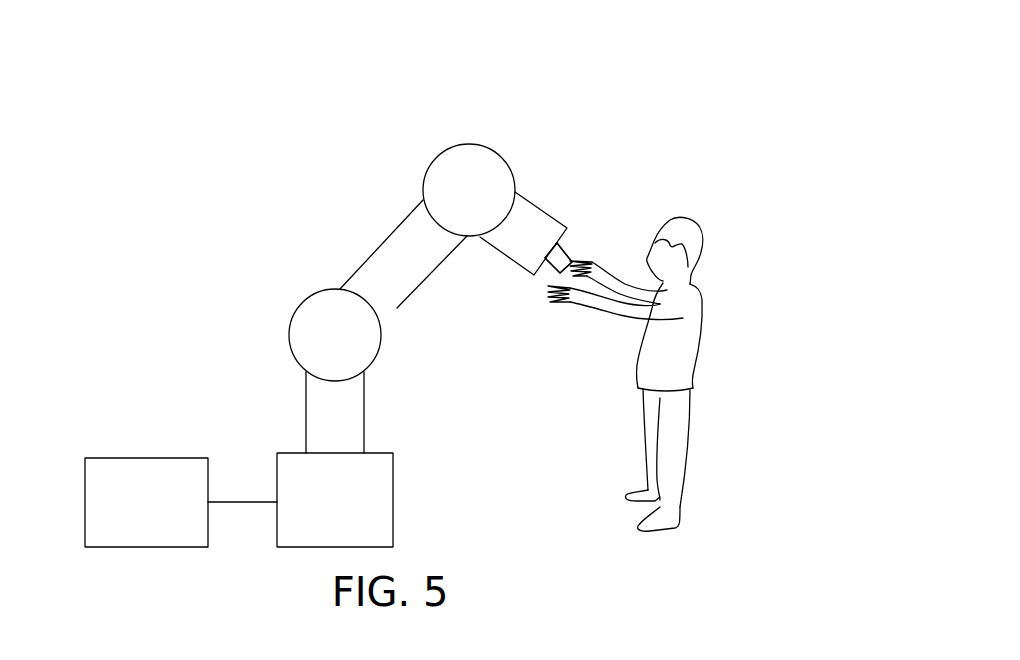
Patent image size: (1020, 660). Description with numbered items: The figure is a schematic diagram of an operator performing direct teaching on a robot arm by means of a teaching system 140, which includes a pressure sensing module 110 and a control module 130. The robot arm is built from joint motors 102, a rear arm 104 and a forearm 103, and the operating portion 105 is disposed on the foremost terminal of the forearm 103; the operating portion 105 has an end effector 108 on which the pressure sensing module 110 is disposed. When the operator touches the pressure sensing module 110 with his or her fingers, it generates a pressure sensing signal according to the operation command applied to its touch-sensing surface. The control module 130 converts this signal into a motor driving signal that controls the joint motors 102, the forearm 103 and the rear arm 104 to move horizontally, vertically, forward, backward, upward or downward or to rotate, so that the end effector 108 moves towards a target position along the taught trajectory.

The teaching system 140 is at (85, 80).
The joint motors 102 is at (467, 160).
The forearm 103 is at (542, 208).
The rear arm 104 is at (390, 252).
The operating portion 105 is at (538, 267).
The end effector 108 is at (558, 258).
The pressure sensing module 110 is at (566, 247).
The control module 130 is at (145, 458).